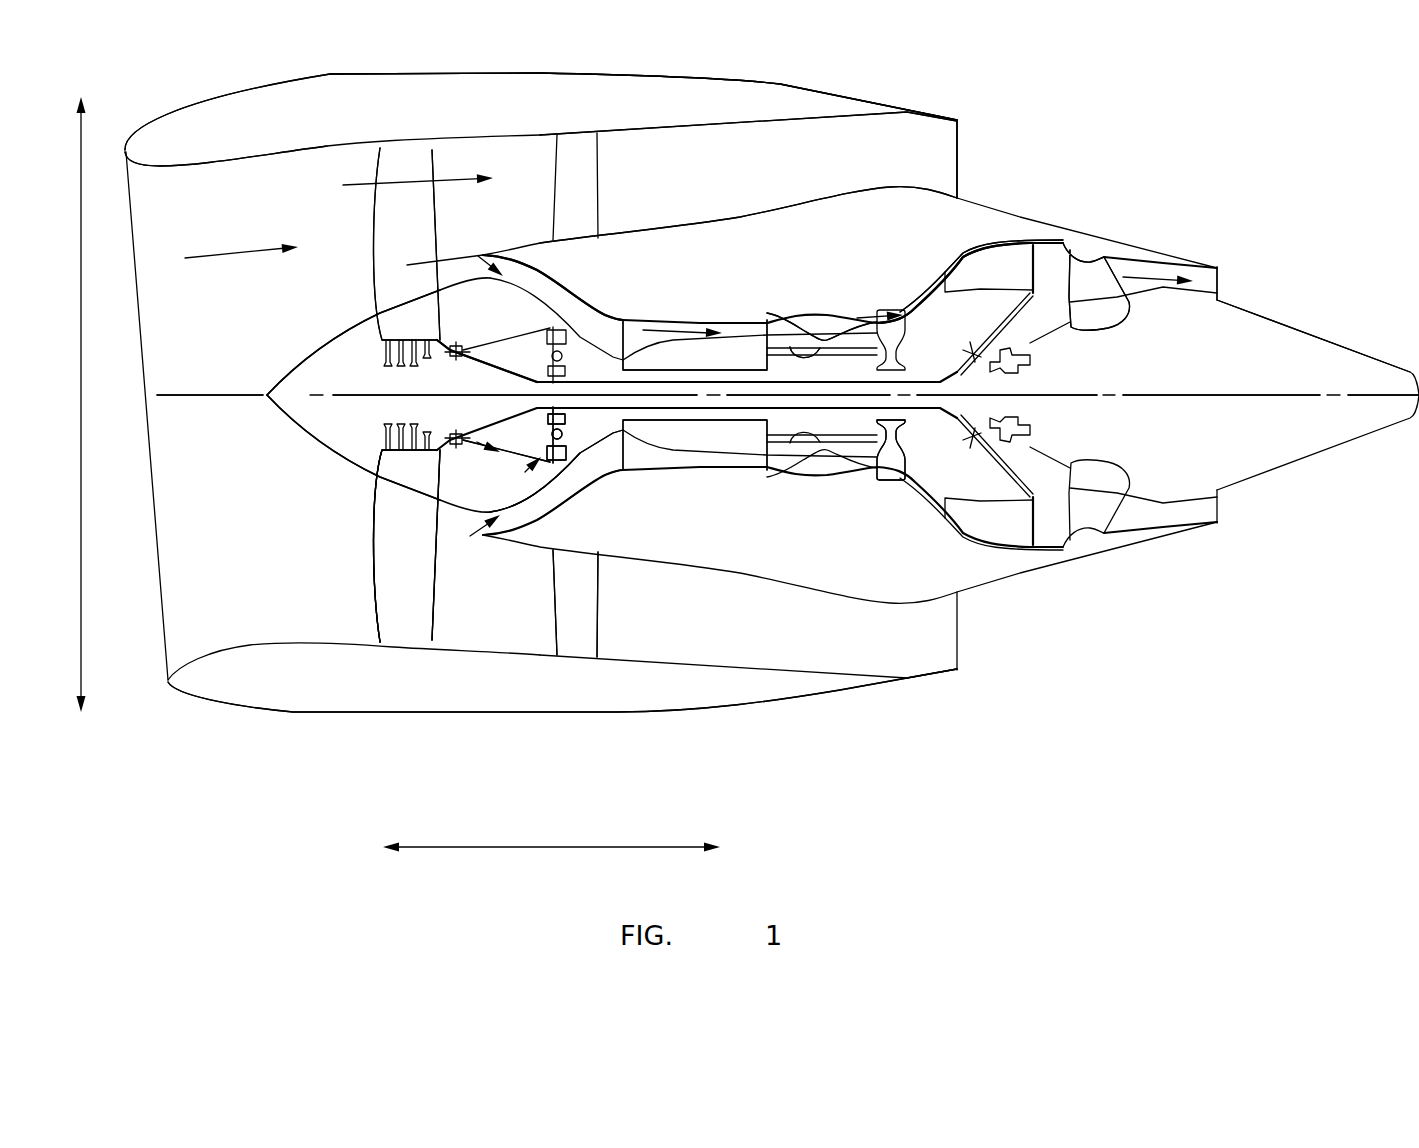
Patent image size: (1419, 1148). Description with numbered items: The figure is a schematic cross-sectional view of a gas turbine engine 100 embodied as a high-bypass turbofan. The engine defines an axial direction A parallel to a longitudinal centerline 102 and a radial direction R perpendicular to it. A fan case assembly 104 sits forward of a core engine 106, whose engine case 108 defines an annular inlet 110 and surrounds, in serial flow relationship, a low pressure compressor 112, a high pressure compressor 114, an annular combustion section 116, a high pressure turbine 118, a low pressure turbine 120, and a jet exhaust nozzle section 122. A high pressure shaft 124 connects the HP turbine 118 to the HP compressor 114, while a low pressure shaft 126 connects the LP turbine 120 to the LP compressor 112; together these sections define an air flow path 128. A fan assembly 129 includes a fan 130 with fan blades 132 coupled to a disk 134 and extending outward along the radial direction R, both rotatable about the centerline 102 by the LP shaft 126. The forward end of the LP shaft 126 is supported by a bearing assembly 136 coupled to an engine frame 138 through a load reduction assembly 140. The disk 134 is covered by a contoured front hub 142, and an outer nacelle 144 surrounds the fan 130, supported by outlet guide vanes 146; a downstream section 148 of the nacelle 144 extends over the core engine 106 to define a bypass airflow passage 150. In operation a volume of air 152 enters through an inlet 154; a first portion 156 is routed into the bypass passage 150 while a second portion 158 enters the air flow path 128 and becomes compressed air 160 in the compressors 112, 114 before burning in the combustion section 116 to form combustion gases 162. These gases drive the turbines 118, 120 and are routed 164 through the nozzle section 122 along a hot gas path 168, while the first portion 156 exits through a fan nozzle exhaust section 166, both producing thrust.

The gas turbine engine 100 is at (1055, 90).
The longitudinal centerline 102 is at (1207, 393).
The fan case assembly 104 is at (273, 640).
The core engine 106 is at (813, 233).
The engine case 108 is at (767, 478).
The annular inlet 110 is at (470, 536).
The low pressure compressor 112 is at (483, 257).
The high pressure compressor 114 is at (637, 318).
The combustion section 116 is at (847, 310).
The high pressure turbine 118 is at (890, 477).
The low pressure turbine 120 is at (978, 260).
The jet exhaust nozzle section 122 is at (1217, 278).
The high pressure shaft 124 is at (797, 360).
The low pressure shaft 126 is at (617, 450).
The air flow path 128 is at (601, 457).
The fan assembly 129 is at (323, 450).
The fan 130 is at (365, 480).
The fan blades 132 is at (380, 577).
The disk 134 is at (380, 335).
The bearing assembly 136 is at (505, 460).
The engine frame 138 is at (560, 467).
The load reduction assembly 140 is at (530, 320).
The front hub 142 is at (280, 410).
The outer nacelle 144 is at (373, 715).
The outlet guide vanes 146 is at (582, 640).
The downstream section 148 is at (777, 88).
The bypass airflow passage 150 is at (740, 165).
The volume of air 152 is at (240, 257).
The inlet 154 is at (217, 197).
The first portion of air 156 is at (370, 185).
The second portion of air 158 is at (433, 263).
The compressed air 160 is at (667, 327).
The combustion gases 162 is at (863, 322).
The routing of combustion gases 164 is at (1147, 273).
The fan nozzle exhaust section 166 is at (943, 135).
The hot gas path 168 is at (1057, 240).
The radial direction R is at (83, 400).
The axial direction A is at (545, 847).